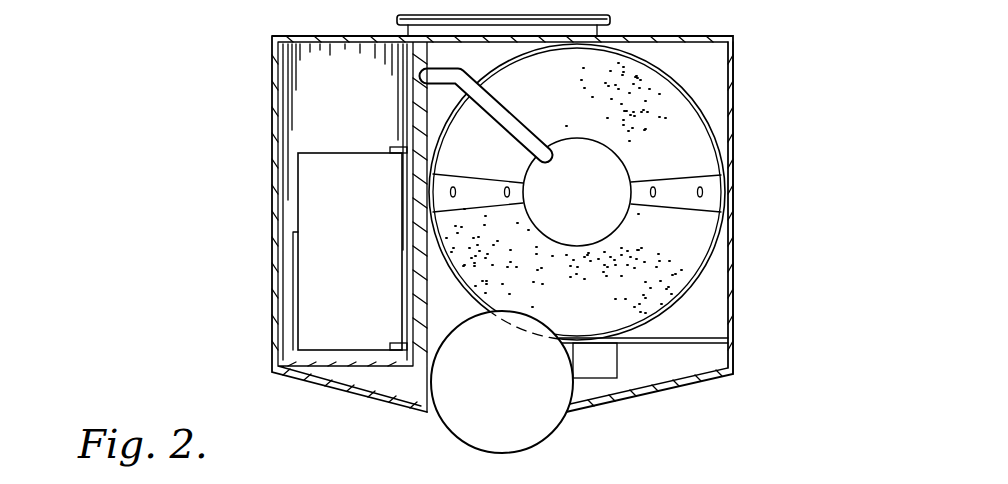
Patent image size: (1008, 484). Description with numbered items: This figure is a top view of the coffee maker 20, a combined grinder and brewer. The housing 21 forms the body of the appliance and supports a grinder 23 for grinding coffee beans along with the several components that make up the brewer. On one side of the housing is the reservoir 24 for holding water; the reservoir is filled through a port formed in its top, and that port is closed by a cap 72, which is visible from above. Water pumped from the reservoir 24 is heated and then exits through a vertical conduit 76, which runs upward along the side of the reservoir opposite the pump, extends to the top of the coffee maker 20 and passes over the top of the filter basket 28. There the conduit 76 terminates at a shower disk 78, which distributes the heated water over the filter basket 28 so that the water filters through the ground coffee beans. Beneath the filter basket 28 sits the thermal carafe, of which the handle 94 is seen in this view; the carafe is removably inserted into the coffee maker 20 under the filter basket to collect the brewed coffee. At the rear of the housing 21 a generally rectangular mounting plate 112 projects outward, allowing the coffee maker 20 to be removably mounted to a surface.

The coffee maker 20 is at (256, 328).
The housing 21 is at (733, 345).
The grinder 23 is at (556, 448).
The reservoir 24 is at (295, 133).
The filter basket 28 is at (673, 83).
The cap 72 is at (315, 247).
The vertical conduit 76 is at (508, 118).
The shower disk 78 is at (628, 215).
The handle 94 is at (612, 369).
The mounting plate 112 is at (613, 20).